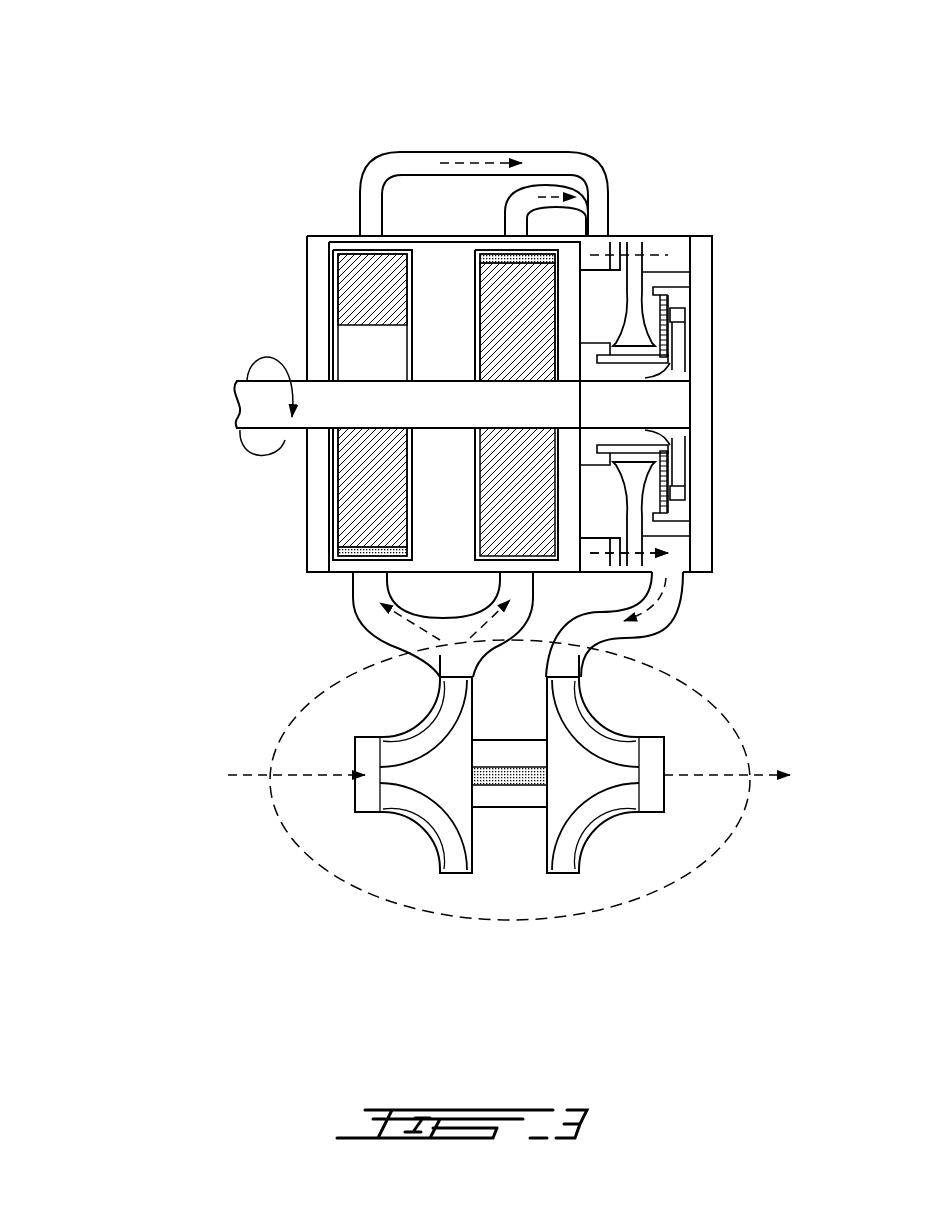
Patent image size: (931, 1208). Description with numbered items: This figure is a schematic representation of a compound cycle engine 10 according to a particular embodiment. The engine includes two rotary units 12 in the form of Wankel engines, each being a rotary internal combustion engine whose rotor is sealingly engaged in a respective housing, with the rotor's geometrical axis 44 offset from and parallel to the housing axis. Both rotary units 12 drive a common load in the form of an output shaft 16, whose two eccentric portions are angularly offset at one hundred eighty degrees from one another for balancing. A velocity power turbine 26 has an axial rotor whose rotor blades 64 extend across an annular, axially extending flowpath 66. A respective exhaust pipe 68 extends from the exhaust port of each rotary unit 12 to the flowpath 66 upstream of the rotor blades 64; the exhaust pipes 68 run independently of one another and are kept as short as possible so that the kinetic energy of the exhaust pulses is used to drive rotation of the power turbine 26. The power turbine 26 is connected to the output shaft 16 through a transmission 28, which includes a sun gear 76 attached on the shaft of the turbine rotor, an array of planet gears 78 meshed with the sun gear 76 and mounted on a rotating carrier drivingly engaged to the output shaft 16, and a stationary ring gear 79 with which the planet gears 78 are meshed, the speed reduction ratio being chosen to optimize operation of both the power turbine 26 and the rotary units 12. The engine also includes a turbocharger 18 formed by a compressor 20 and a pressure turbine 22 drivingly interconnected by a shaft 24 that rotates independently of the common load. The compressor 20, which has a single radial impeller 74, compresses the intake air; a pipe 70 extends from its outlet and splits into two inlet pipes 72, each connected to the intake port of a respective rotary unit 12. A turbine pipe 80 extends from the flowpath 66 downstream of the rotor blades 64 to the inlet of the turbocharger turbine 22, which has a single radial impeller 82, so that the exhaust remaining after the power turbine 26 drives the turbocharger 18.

The compound cycle engine 10 is at (180, 185).
The rotary unit 12 is at (330, 248).
The output shaft 16 is at (317, 410).
The turbocharger 18 is at (300, 858).
The compressor 20 is at (420, 775).
The pressure turbine 22 is at (578, 777).
The shaft 24 is at (507, 777).
The velocity power turbine 26 is at (650, 240).
The transmission 28 is at (685, 330).
The geometrical axis 44 is at (515, 405).
The rotor blades 64 is at (635, 265).
The annular flowpath 66 is at (618, 248).
The exhaust pipe 68 is at (545, 163).
The pipe 70 is at (455, 665).
The inlet pipe 72 is at (370, 592).
The radial impeller 74 is at (418, 806).
The sun gear 76 is at (662, 348).
The planet gears 78 is at (663, 478).
The stationary ring gear 79 is at (667, 513).
The turbine pipe 80 is at (658, 607).
The radial impeller 82 is at (603, 750).